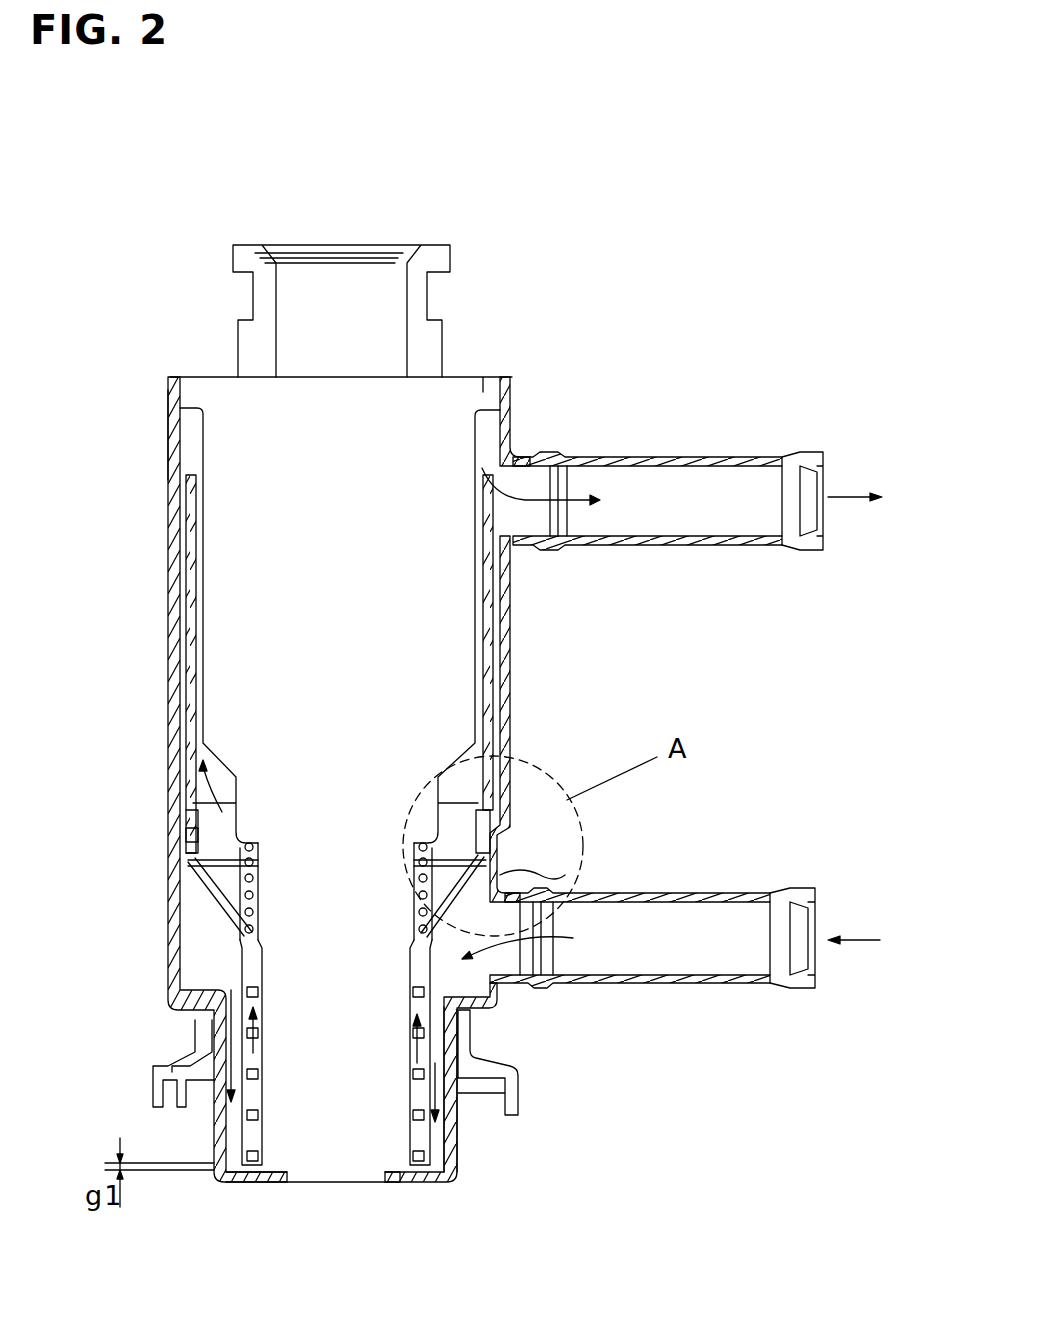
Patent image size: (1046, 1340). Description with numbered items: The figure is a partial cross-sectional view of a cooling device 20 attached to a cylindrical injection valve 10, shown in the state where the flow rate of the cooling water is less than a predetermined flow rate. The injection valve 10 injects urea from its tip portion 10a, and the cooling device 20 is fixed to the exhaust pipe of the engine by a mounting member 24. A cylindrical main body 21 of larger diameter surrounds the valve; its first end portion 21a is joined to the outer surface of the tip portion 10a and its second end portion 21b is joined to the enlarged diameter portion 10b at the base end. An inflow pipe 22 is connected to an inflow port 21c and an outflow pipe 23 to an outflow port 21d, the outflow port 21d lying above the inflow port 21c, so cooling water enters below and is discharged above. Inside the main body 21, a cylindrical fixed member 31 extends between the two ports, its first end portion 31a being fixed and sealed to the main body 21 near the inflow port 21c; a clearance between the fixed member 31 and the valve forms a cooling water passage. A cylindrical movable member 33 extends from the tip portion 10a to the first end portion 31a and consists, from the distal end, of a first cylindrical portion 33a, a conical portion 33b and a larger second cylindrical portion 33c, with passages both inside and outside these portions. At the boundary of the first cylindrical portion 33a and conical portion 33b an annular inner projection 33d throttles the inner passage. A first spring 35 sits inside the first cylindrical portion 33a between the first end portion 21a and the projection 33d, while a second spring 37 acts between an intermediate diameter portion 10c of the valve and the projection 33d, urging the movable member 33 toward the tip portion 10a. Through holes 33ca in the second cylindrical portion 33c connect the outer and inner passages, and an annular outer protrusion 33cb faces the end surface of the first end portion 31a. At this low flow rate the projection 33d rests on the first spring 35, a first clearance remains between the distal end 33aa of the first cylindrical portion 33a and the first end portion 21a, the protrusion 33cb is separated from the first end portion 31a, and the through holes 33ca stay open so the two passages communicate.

The injection valve 10 is at (440, 347).
The tip portion 10a is at (333, 1160).
The enlarged diameter portion 10b is at (483, 385).
The intermediate diameter portion 10c is at (458, 790).
The cooling device 20 is at (652, 393).
The main body 21 is at (500, 412).
The first end portion 21a is at (396, 1183).
The second end portion 21b is at (168, 400).
The inflow port 21c is at (545, 880).
The outflow port 21d is at (533, 556).
The inflow pipe 22 is at (715, 893).
The outflow pipe 23 is at (747, 455).
The mounting member 24 is at (518, 1066).
The fixed member 31 is at (186, 540).
The first end portion 31a is at (490, 808).
The movable member 33 is at (240, 950).
The first cylindrical portion 33a is at (222, 1110).
The distal end 33aa is at (425, 1183).
The conical portion 33b is at (205, 896).
The second cylindrical portion 33c is at (200, 800).
The through holes 33ca is at (182, 845).
The protrusion 33cb is at (505, 877).
The projection 33d is at (477, 1007).
The first spring 35 is at (238, 1130).
The second spring 37 is at (186, 835).